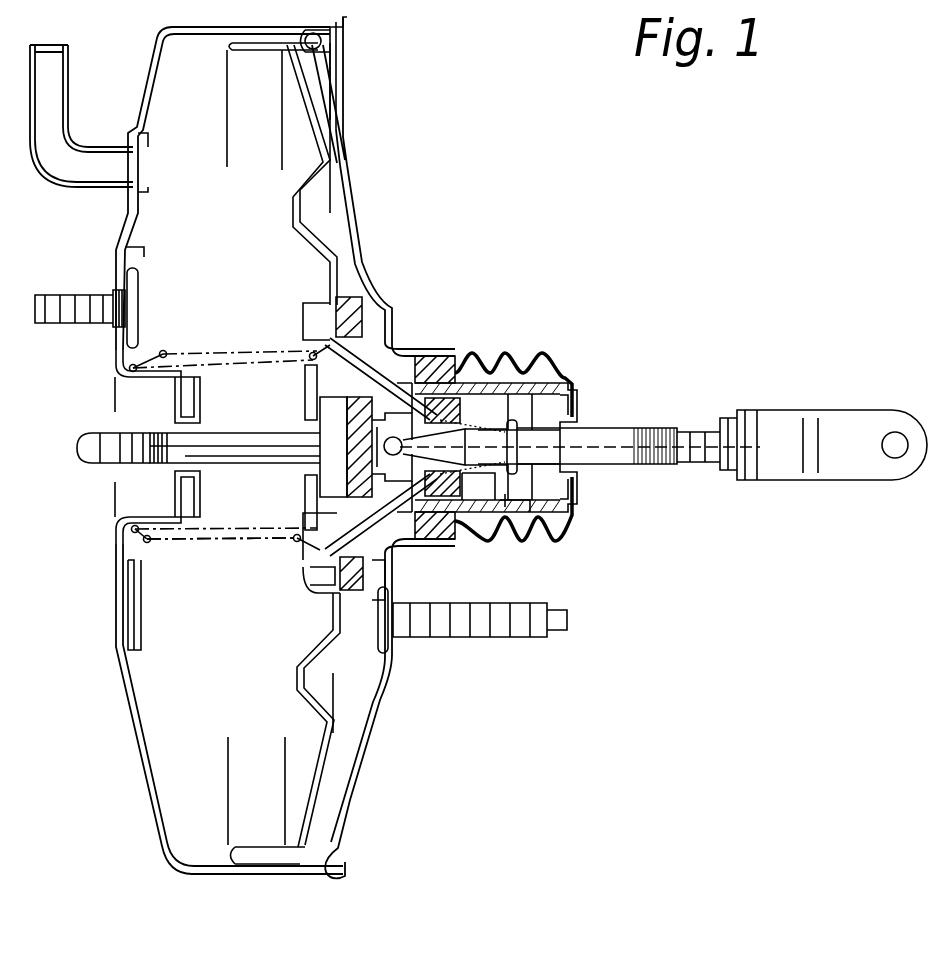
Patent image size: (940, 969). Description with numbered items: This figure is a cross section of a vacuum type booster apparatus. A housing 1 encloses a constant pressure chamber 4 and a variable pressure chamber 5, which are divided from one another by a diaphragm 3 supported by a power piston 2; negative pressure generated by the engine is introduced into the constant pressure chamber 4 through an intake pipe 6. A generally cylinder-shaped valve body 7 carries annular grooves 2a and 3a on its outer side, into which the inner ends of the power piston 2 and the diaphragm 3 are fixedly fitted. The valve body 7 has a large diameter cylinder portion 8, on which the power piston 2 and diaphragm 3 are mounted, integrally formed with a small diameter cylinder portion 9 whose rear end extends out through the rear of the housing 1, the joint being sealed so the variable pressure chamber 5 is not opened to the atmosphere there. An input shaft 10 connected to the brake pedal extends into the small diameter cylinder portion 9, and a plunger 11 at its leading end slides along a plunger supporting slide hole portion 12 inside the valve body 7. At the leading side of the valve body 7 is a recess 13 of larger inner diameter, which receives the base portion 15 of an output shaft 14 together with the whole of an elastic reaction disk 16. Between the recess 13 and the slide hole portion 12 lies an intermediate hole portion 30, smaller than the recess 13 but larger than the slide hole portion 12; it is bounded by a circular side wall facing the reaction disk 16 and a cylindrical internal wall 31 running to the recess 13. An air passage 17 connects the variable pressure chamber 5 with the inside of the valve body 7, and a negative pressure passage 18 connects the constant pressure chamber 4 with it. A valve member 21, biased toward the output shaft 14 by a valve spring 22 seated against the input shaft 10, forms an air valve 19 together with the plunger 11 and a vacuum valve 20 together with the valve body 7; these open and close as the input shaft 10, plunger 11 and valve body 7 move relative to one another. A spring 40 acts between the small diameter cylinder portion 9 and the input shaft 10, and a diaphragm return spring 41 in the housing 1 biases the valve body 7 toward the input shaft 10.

The housing 1 is at (352, 72).
The power piston 2 is at (290, 208).
The annular groove 2a is at (304, 312).
The diaphragm 3 is at (340, 112).
The annular groove 3a is at (355, 258).
The constant pressure chamber 4 is at (152, 752).
The variable pressure chamber 5 is at (354, 703).
The intake pipe 6 is at (65, 165).
The valve body 7 is at (313, 585).
The large diameter cylinder portion 8 is at (392, 574).
The small diameter cylinder portion 9 is at (578, 524).
The input shaft 10 is at (618, 432).
The plunger 11 is at (455, 345).
The plunger supporting slide hole portion 12 is at (497, 345).
The recess 13 is at (330, 492).
The output shaft 14 is at (97, 455).
The base portion of output shaft 15 is at (328, 407).
The elastic reaction disk 16 is at (350, 450).
The air passage 17 is at (420, 535).
The negative pressure passage 18 is at (397, 345).
The air valve 19 is at (478, 522).
The vacuum valve 20 is at (445, 417).
The valve member 21 is at (520, 530).
The valve spring 22 is at (540, 412).
The intermediate hole portion 30 is at (402, 338).
The wall of intermediate hole portion 31 is at (310, 574).
The spring 40 is at (552, 423).
The diaphragm return spring 41 is at (197, 548).